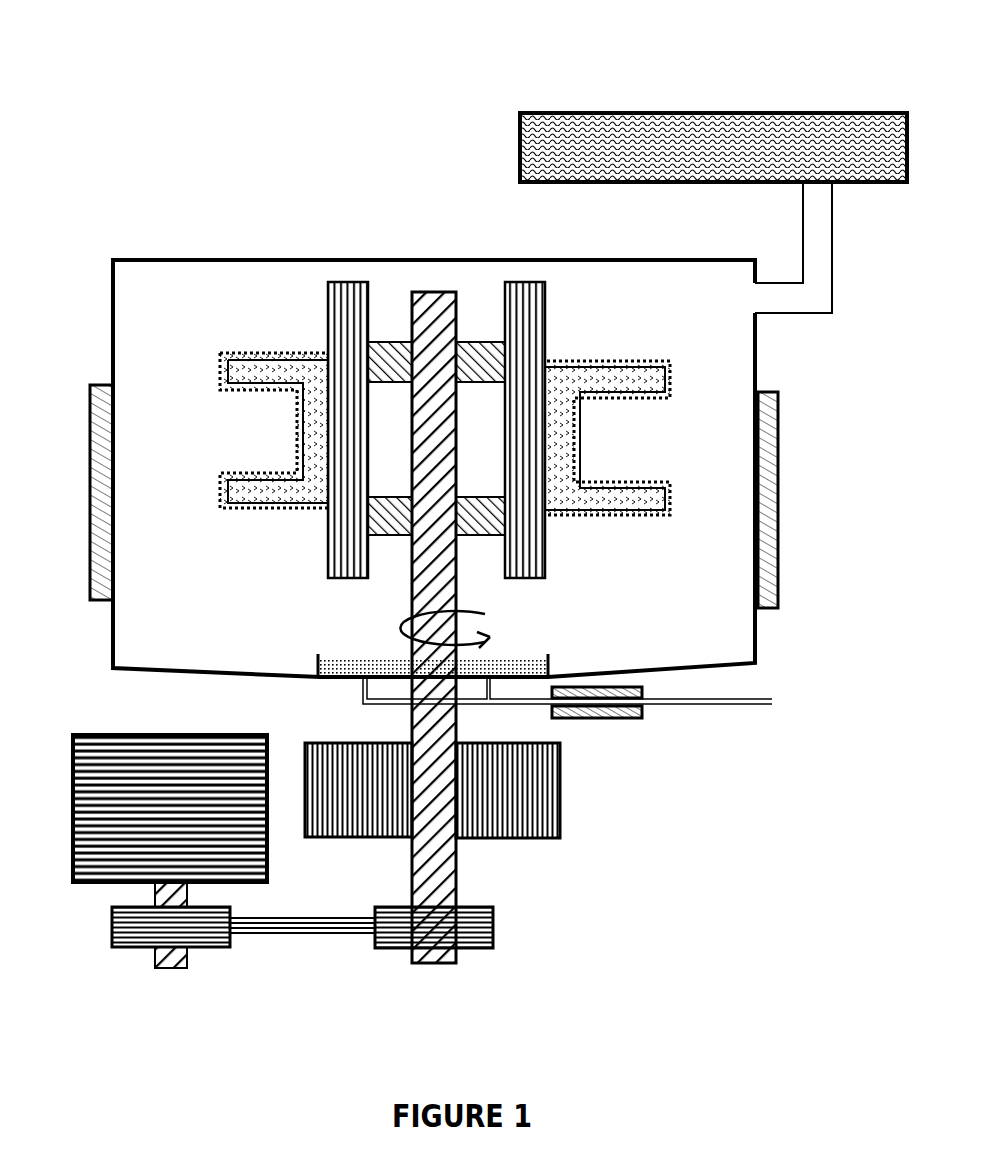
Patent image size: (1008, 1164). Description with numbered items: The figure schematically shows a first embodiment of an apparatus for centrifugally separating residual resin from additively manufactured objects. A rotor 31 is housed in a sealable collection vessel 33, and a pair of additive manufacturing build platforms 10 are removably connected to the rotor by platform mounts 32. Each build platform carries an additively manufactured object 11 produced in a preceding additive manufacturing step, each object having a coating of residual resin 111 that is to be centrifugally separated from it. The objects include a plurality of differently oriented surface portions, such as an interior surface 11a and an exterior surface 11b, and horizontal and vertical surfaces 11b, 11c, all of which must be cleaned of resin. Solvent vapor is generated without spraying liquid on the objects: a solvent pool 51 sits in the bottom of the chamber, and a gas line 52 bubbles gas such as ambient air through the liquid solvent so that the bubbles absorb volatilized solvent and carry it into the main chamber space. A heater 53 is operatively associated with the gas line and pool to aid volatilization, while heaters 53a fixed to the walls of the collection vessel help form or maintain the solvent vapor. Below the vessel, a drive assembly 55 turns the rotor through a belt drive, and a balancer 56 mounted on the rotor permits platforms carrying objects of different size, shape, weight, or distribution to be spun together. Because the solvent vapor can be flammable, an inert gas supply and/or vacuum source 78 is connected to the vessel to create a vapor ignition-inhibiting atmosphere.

The inert gas supply 78 is at (520, 133).
The sealable collection vessel 33 is at (278, 258).
The heater 53a is at (107, 540).
The additive manufacturing build platform 10 is at (436, 430).
The platform mount 32 is at (412, 338).
The rotor 31 is at (420, 578).
The additively manufactured object 11 is at (419, 440).
The residual resin 111 is at (223, 358).
The interior surface 11a is at (263, 505).
The exterior horizontal surface 11b is at (237, 480).
The vertical surface 11c is at (300, 442).
The solvent pool 51 is at (350, 677).
The gas line 52 is at (530, 704).
The heater 53 is at (625, 720).
The balancer 56 is at (553, 808).
The drive assembly 55 is at (398, 930).